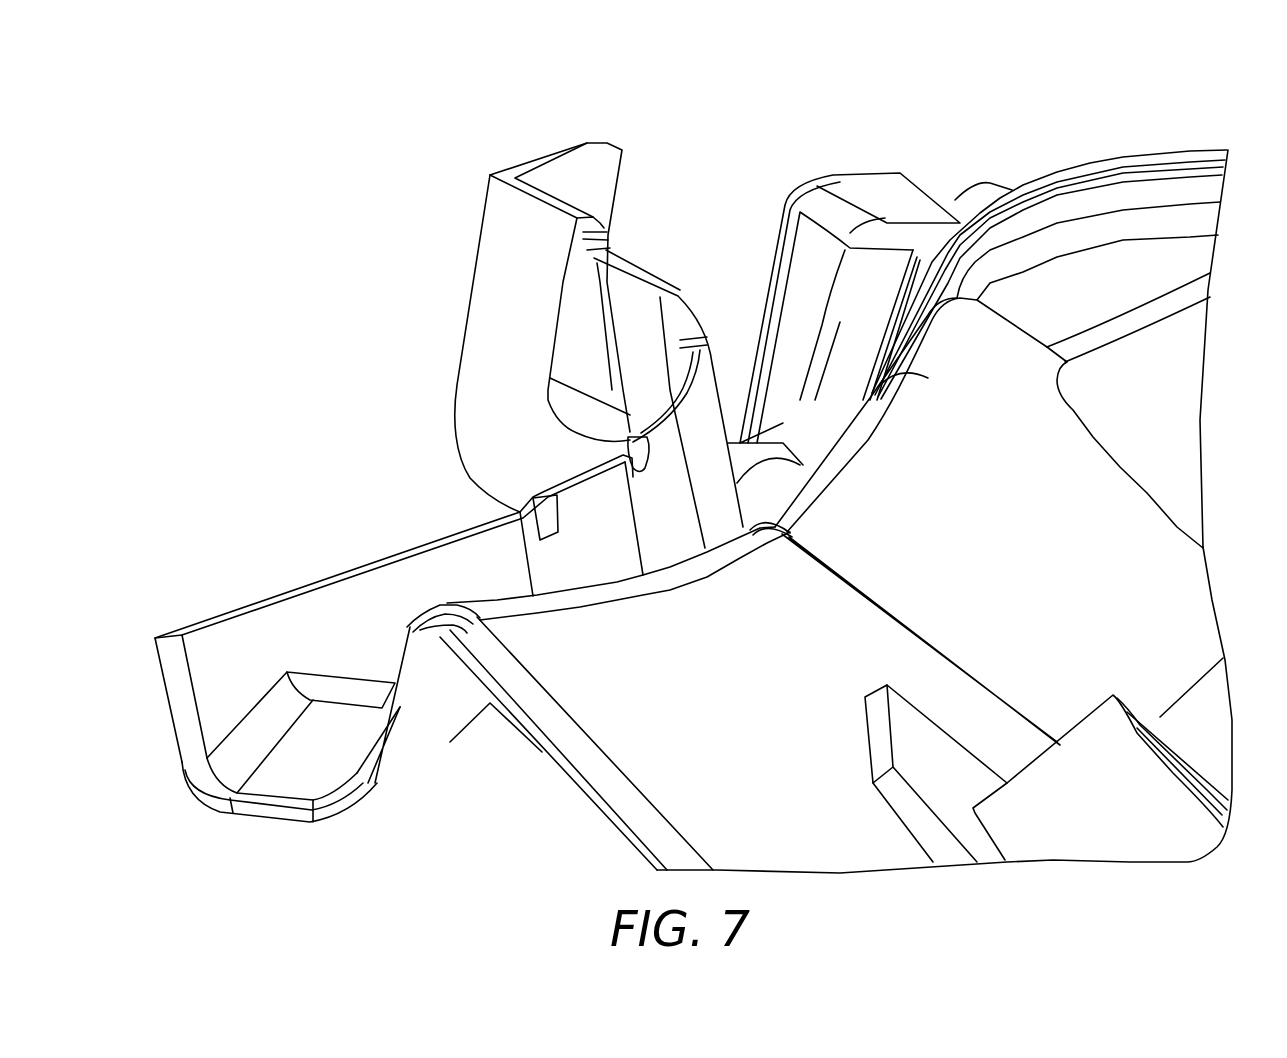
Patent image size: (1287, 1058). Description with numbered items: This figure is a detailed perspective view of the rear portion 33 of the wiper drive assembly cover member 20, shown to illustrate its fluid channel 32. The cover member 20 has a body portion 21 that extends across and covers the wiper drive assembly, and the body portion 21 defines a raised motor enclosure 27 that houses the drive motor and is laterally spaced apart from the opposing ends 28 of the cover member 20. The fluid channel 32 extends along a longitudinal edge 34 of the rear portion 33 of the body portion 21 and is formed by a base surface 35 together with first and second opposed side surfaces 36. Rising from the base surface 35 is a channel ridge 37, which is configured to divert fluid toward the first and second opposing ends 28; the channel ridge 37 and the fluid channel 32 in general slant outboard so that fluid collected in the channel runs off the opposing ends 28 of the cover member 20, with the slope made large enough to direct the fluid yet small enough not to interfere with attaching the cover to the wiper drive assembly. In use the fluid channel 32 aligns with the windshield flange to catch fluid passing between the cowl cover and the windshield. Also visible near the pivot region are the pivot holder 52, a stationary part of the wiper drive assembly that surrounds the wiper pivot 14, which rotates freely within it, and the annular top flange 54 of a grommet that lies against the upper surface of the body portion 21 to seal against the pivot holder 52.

The wiper drive assembly cover member 20 is at (1198, 107).
The motor enclosure 27 is at (1190, 258).
The fluid channel 32 is at (745, 360).
The longitudinal edge 34 is at (893, 413).
The body portion 21 is at (1190, 584).
The rear portion 33 is at (598, 685).
The opposing ends 28 is at (613, 793).
The first and second opposed side surfaces 36 is at (177, 690).
The base surface 35 is at (255, 810).
The channel ridge 37 is at (330, 670).
The annular top flange 54 is at (952, 803).
The pivot holder 52 is at (1127, 847).
The wiper pivot 14 is at (1207, 727).